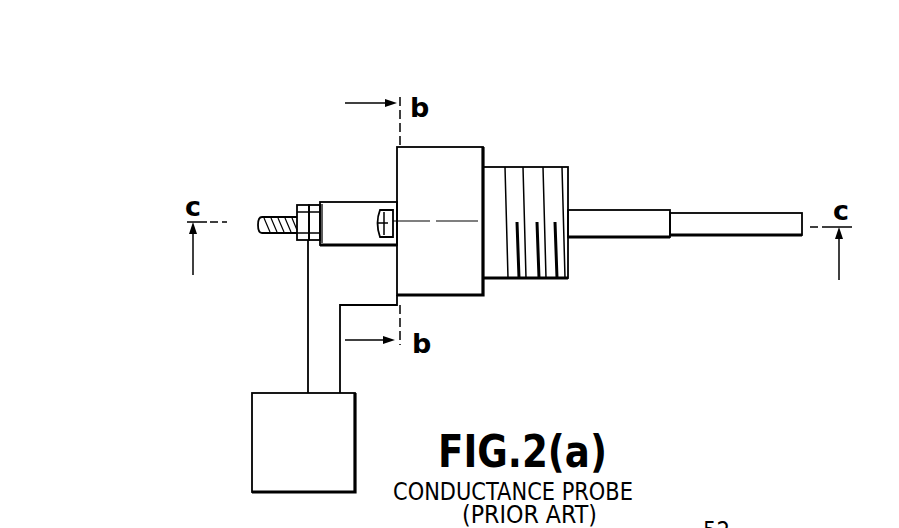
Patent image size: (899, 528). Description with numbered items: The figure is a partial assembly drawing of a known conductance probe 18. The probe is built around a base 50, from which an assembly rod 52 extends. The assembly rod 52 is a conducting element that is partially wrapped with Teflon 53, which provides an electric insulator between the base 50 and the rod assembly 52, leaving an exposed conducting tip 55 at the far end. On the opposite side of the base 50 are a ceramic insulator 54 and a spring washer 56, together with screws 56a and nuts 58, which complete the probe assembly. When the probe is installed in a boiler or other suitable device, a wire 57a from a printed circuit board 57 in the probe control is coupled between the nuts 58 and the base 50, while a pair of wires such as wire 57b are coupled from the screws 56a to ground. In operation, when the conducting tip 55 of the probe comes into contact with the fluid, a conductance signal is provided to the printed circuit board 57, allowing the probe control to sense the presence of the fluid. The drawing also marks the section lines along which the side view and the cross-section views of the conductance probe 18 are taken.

The conductance probe 18 is at (322, 50).
The base 50 is at (475, 147).
The assembly rod 52 is at (711, 190).
The Teflon 53 is at (620, 237).
The ceramic insulator 54 is at (322, 202).
The conducting tip 55 is at (773, 237).
The spring washer 56 is at (332, 203).
The screw 56a is at (382, 208).
The printed circuit board 57 is at (355, 427).
The wire 57a is at (307, 372).
The wire 57b is at (342, 370).
The nuts 58 is at (297, 243).